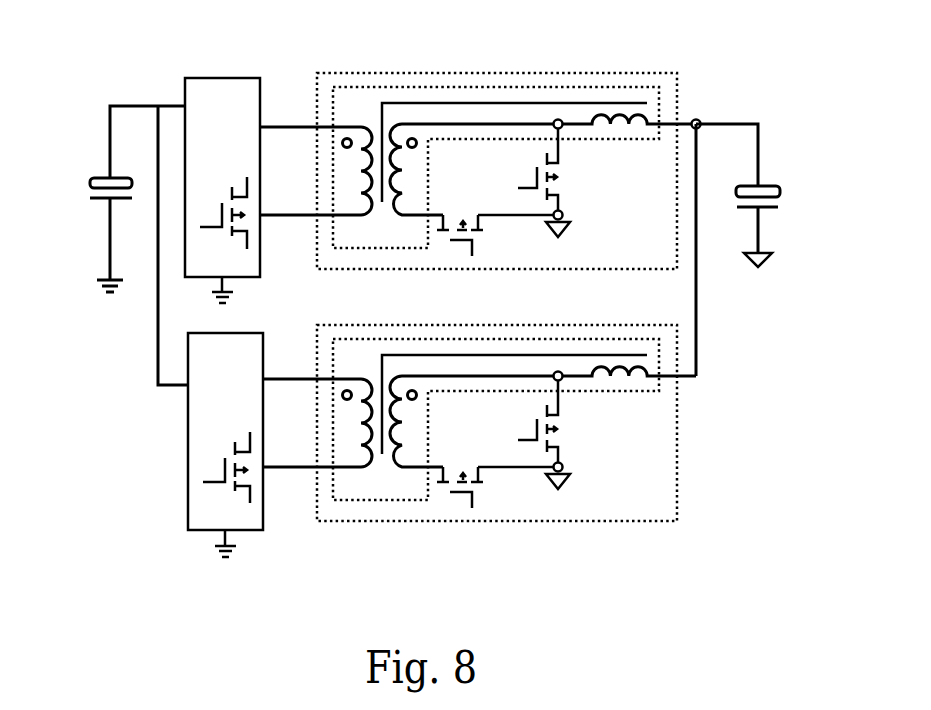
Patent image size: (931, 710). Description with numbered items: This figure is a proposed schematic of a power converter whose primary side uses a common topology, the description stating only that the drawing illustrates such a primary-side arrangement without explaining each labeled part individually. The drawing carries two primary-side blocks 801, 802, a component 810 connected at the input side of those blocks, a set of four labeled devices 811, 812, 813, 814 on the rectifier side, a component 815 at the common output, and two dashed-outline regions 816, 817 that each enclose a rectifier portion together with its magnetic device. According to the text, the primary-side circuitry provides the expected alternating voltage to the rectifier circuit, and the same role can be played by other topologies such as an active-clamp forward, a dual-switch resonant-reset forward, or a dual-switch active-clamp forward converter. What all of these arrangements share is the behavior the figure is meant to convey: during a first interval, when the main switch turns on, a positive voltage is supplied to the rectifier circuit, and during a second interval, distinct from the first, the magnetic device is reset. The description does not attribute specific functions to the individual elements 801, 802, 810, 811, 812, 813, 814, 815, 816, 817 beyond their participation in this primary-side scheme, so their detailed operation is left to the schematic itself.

The first controller 801 is at (220, 73).
The second controller 802 is at (186, 434).
The input capacitor 810 is at (85, 232).
The first synchronous rectifier transistor 811 is at (495, 216).
The first forward rectifier transistor 812 is at (558, 180).
The second synchronous rectifier transistor 813 is at (497, 463).
The second forward rectifier transistor 814 is at (560, 432).
The output capacitor 815 is at (742, 210).
The second transformer and rectifier stage 816 is at (558, 419).
The first transformer and rectifier stage 817 is at (608, 87).